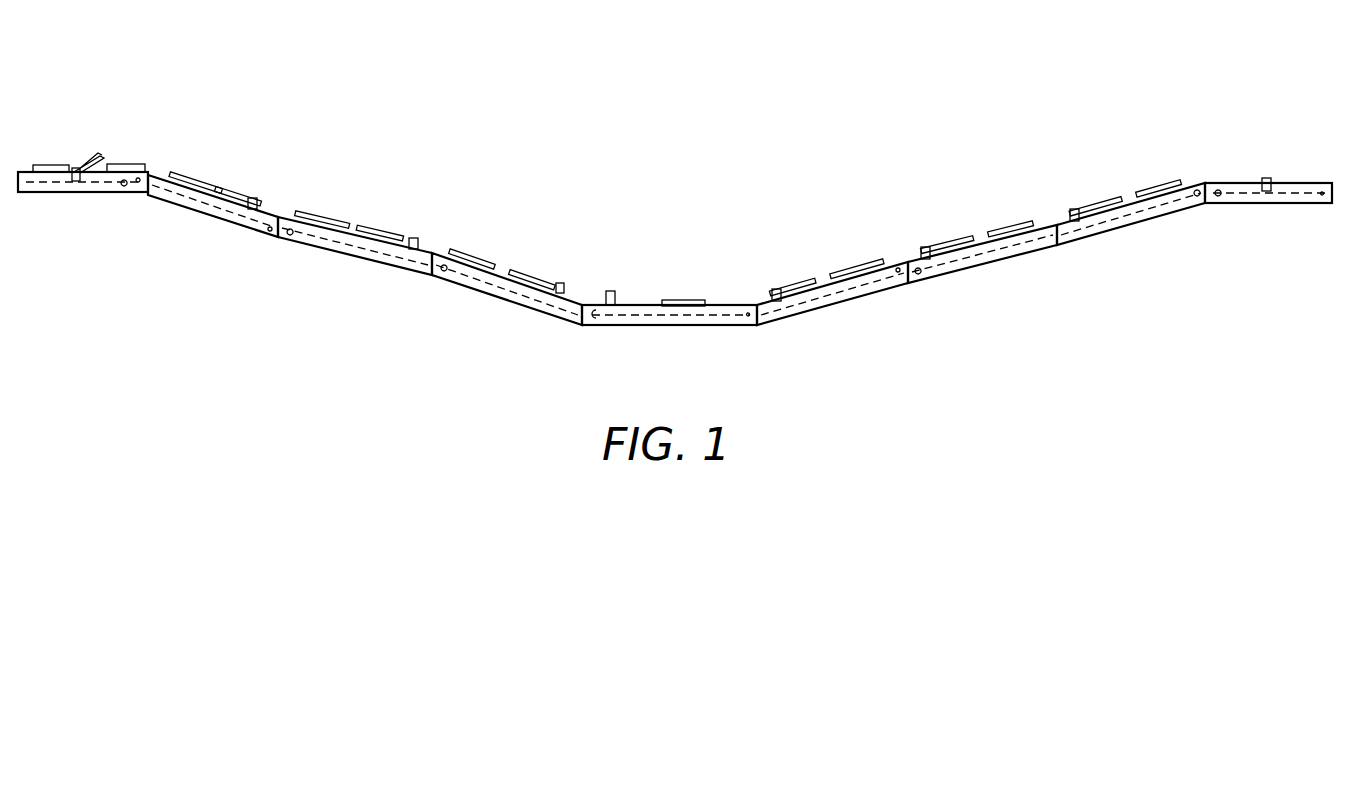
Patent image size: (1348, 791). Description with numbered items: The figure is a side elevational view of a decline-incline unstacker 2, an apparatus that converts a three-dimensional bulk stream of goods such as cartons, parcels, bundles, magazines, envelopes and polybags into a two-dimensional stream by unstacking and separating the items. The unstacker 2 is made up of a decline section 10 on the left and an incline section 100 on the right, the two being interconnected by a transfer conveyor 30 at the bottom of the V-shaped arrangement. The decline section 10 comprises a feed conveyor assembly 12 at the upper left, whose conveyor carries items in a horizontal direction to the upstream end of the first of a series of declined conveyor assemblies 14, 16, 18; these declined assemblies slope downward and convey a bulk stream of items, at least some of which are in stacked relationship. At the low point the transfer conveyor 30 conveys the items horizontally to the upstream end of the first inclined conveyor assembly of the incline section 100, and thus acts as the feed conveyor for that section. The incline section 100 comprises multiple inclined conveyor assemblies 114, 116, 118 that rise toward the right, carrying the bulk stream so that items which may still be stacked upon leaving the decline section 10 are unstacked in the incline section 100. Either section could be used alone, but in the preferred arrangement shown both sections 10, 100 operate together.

The decline-incline unstacker 2 is at (791, 155).
The decline section 10 is at (380, 225).
The feed conveyor assembly 12 is at (78, 195).
The declined conveyor assembly 14 is at (207, 220).
The declined conveyor assembly 16 is at (350, 260).
The declined conveyor assembly 18 is at (505, 298).
The transfer conveyor 30 is at (711, 297).
The incline section 100 is at (932, 243).
The inclined conveyor assembly 114 is at (838, 308).
The inclined conveyor assembly 116 is at (983, 264).
The inclined conveyor assembly 118 is at (1135, 228).